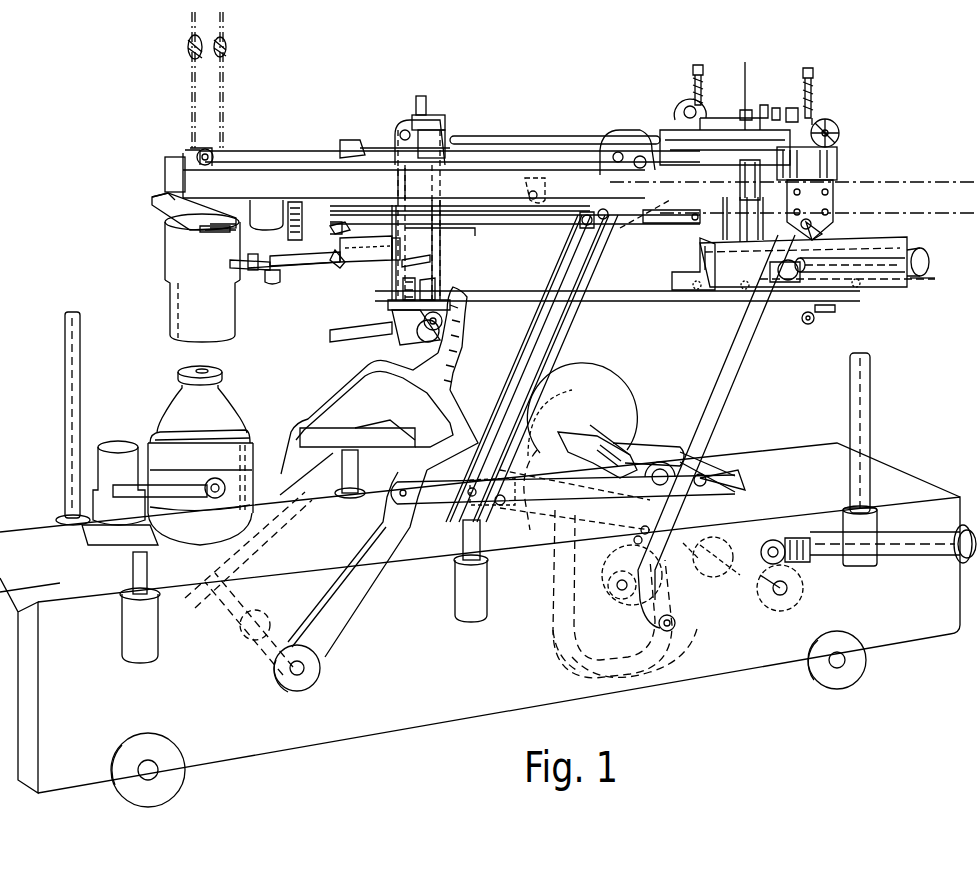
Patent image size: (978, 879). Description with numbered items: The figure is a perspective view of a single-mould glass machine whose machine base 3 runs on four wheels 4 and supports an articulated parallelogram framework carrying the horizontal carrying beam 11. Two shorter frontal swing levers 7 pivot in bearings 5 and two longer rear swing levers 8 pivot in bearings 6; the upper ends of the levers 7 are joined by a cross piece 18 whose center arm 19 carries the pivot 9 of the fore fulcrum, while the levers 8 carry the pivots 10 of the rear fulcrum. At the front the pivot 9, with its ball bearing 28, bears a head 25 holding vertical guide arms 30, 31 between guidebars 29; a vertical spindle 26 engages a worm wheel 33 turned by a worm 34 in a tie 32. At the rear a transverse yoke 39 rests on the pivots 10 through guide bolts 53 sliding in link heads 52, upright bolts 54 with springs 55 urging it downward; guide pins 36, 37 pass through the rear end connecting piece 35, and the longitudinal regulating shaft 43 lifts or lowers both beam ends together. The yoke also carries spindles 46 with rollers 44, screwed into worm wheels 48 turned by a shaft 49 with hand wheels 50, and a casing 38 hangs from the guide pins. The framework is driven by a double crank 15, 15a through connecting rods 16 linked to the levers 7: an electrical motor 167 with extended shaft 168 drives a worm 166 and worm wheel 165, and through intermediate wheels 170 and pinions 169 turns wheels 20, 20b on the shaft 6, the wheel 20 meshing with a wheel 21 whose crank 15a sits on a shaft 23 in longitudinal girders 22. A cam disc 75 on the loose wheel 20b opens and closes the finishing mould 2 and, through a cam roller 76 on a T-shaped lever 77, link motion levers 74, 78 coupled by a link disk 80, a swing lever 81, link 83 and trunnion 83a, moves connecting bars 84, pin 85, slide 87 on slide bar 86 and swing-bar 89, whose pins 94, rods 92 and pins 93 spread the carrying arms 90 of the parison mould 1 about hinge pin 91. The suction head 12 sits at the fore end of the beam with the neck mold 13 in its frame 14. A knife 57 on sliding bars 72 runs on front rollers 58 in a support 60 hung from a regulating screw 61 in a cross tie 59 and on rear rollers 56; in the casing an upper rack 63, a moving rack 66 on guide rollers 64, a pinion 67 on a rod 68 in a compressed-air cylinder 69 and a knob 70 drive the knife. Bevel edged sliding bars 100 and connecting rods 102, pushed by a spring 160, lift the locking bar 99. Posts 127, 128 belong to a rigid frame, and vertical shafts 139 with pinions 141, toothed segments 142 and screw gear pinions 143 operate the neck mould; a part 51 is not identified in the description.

The parison mould 1 is at (170, 317).
The finishing mould 2 is at (170, 400).
The machine base 3 is at (330, 735).
The wheels 4 is at (185, 768).
The bearings 5 is at (305, 668).
The bearings 6 is at (676, 623).
The frontal swing levers 7 is at (375, 570).
The rear swing levers 8 is at (750, 348).
The pivot 9 is at (445, 232).
The pivots 10 is at (835, 217).
The carrying beam 11 is at (165, 167).
The suction head 12 is at (185, 150).
The neck mold 13 is at (160, 210).
The frame 14 is at (148, 197).
The double crank 15 is at (740, 482).
The crank 15a is at (650, 448).
The connecting rods 16 is at (398, 430).
The cross piece 18 is at (455, 395).
The center arm 19 is at (466, 355).
The wheel 20 is at (545, 580).
The loose wheel 20b is at (554, 666).
The wheel 21 is at (590, 400).
The longitudinal girders 22 is at (598, 450).
The shaft 23 is at (612, 442).
The articulated cross piece or head 25 is at (440, 192).
The vertical spindle 26 is at (422, 110).
The ball bearing 28 is at (338, 223).
The guidebars 29 is at (398, 185).
The vertical guide arm 30 is at (404, 252).
The vertical guide arm 31 is at (437, 285).
The tie 32 is at (445, 138).
The worm wheel 33 is at (430, 118).
The worm 34 is at (400, 135).
The rear end connecting piece 35 is at (725, 156).
The vertical guide pin 36 is at (722, 228).
The vertical guide pin 37 is at (682, 212).
The casing 38 is at (880, 240).
The transverse yoke 39 is at (838, 160).
The longitudinal regulating shaft 43 is at (545, 137).
The rollers 44 is at (737, 180).
The vertical spindles 46 is at (764, 104).
The worm wheels 48 is at (777, 108).
The common shaft 49 is at (792, 108).
The hand wheels 50 is at (840, 133).
The axis 51 is at (943, 200).
The link heads 52 is at (825, 195).
The guide bolts 53 is at (855, 203).
The upright bolts 54 is at (692, 70).
The springs 55 is at (678, 105).
The rear rollers 56 is at (812, 324).
The knife 57 is at (335, 340).
The front rollers 58 is at (418, 338).
The cross tie 59 is at (403, 285).
The support 60 is at (445, 320).
The regulating screw 61 is at (432, 262).
The upper rack 63 is at (745, 258).
The guide rollers 64 is at (745, 290).
The lower moving rack 66 is at (925, 280).
The pinion 67 is at (780, 285).
The rod 68 is at (875, 275).
The compressed-air cylinder 69 is at (930, 258).
The knob 70 is at (832, 321).
The longitudinal sliding bars 72 is at (690, 302).
The link motion levers 74 is at (545, 330).
The cam disc 75 is at (572, 658).
The cam roller 76 is at (590, 552).
The T-shaped lever 77 is at (632, 565).
The link motion levers 78 is at (572, 500).
The link disk 80 is at (480, 502).
The swing lever 81 is at (625, 138).
The link 83 is at (608, 220).
The trunnion 83a is at (582, 225).
The connecting bars 84 is at (515, 224).
The pin 85 is at (395, 260).
The slide bar 86 is at (369, 251).
The slide 87 is at (305, 253).
The swing-bar 89 is at (335, 266).
The carrying arms 90 is at (165, 247).
The hinge pin 91 is at (274, 287).
The rods 92 is at (320, 268).
The pins 93 is at (252, 272).
The pins 94 is at (343, 268).
The locking bar 99 is at (212, 150).
The bevel edged sliding bars 100 is at (305, 151).
The connecting rods 102 is at (385, 150).
The posts 127 is at (65, 442).
The posts 128 is at (358, 468).
The vertical shafts 139 is at (222, 88).
The pinions 141 is at (236, 228).
The toothed segments 142 is at (205, 234).
The screw gear pinions 143 is at (214, 40).
The spring 160 is at (525, 182).
The worm wheel 165 is at (773, 603).
The worm 166 is at (795, 540).
The electrical motor 167 is at (948, 500).
The extended shaft 168 is at (905, 532).
The pinions 169 is at (732, 552).
The intermediate wheels 170 is at (690, 575).